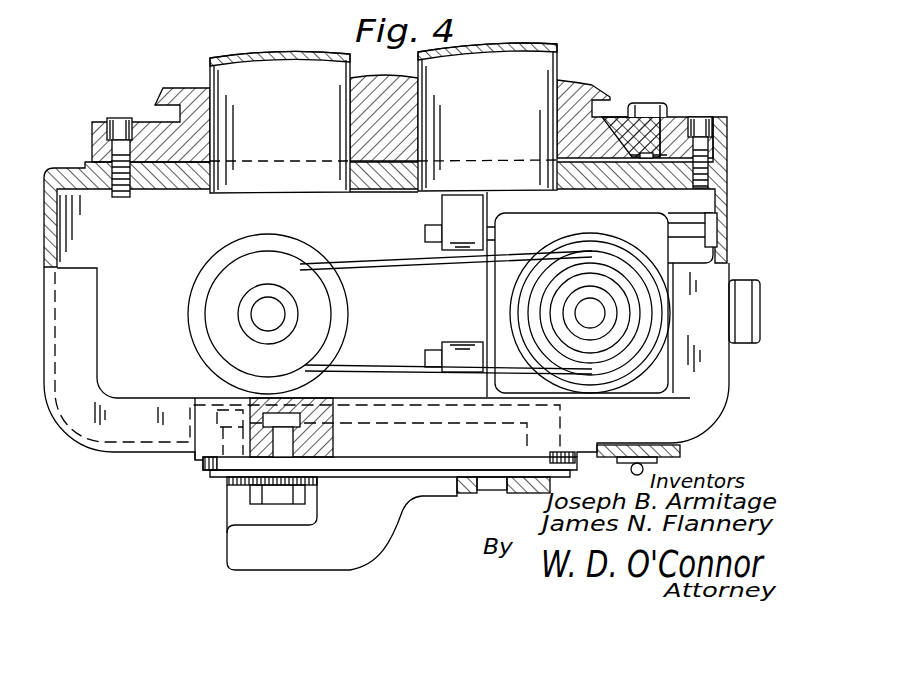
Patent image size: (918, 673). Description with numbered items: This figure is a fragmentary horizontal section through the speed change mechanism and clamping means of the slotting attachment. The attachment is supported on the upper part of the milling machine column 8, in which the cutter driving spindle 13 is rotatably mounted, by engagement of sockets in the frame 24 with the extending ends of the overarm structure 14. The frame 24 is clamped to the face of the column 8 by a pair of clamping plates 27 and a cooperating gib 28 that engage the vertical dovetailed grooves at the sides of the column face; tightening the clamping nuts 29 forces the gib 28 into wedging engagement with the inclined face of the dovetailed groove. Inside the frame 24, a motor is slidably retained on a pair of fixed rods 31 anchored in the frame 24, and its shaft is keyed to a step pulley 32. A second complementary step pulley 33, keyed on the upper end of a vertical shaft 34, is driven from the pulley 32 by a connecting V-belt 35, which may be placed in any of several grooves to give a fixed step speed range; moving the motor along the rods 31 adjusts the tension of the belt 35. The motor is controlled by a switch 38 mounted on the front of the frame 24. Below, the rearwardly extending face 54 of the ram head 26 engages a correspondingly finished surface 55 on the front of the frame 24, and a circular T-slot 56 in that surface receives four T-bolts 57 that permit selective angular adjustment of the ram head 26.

The column 8 is at (163, 90).
The cutter driving spindle 13 is at (371, 194).
The overarm structure 14 is at (210, 68).
The frame 24 is at (729, 181).
The ram head 26 is at (240, 549).
The clamping plates 27 is at (94, 146).
The gib 28 is at (612, 117).
The clamping nuts 29 is at (646, 104).
The fixed rods 31 is at (425, 236).
The step pulley 32 is at (625, 253).
The second step pulley 33 is at (348, 318).
The vertical shaft 34 is at (268, 322).
The V-belt 35 is at (421, 263).
The switch 38 is at (640, 463).
The rearwardly extending face 54 is at (203, 466).
The frame surface 55 is at (480, 458).
The circular T-slot 56 is at (560, 411).
The T-bolts 57 is at (268, 495).